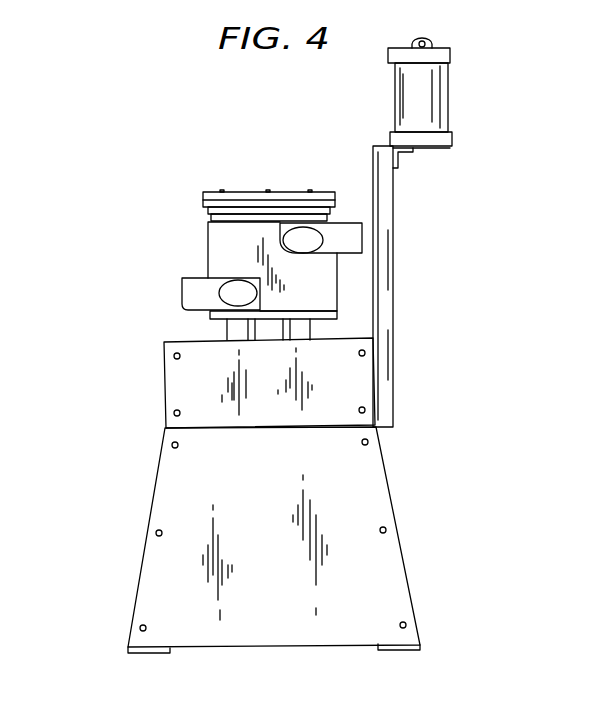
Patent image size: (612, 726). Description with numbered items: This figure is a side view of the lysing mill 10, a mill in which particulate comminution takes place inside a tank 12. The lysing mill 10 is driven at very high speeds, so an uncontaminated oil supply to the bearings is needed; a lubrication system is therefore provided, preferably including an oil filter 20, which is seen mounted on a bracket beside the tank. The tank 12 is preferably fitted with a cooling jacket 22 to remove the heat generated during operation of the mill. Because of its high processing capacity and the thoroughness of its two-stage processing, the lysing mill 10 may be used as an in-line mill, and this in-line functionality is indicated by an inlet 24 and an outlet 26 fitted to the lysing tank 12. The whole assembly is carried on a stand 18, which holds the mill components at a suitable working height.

The lysing mill 10 is at (80, 427).
The tank 12 is at (218, 185).
The stand 18 is at (372, 490).
The oil filter 20 is at (443, 55).
The cooling jacket 22 is at (218, 248).
The inlet 24 is at (190, 291).
The outlet 26 is at (338, 232).